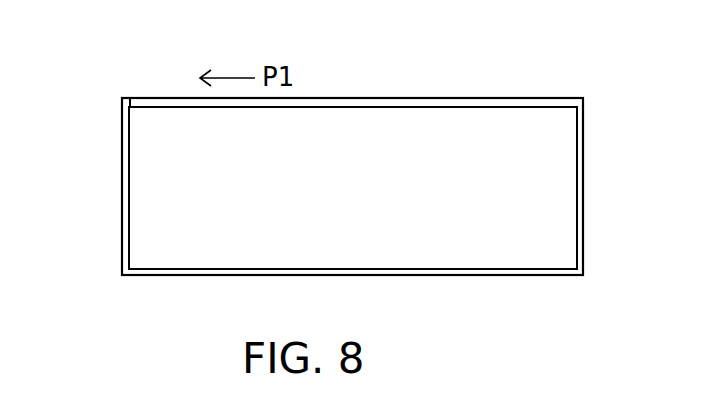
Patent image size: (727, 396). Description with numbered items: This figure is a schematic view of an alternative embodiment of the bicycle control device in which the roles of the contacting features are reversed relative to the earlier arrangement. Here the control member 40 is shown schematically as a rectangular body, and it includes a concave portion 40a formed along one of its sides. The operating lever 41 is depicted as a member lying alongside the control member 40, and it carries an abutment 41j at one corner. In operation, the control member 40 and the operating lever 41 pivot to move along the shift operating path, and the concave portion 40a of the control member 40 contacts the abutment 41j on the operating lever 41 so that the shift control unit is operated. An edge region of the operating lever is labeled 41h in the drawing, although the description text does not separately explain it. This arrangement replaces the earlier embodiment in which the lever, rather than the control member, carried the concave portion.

The control member 40 is at (225, 272).
The concave portion 40a is at (133, 228).
The operating lever 41 is at (433, 107).
The edge portion of film 41h is at (370, 106).
The abutment 41j is at (125, 103).